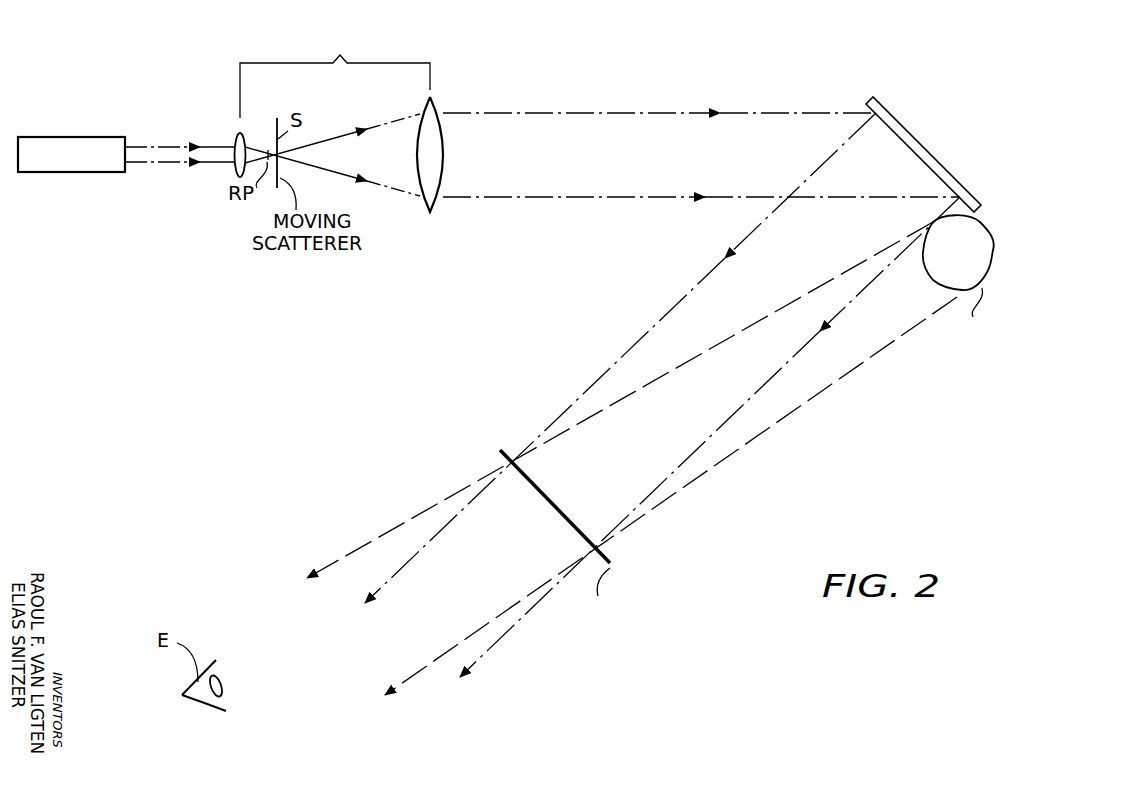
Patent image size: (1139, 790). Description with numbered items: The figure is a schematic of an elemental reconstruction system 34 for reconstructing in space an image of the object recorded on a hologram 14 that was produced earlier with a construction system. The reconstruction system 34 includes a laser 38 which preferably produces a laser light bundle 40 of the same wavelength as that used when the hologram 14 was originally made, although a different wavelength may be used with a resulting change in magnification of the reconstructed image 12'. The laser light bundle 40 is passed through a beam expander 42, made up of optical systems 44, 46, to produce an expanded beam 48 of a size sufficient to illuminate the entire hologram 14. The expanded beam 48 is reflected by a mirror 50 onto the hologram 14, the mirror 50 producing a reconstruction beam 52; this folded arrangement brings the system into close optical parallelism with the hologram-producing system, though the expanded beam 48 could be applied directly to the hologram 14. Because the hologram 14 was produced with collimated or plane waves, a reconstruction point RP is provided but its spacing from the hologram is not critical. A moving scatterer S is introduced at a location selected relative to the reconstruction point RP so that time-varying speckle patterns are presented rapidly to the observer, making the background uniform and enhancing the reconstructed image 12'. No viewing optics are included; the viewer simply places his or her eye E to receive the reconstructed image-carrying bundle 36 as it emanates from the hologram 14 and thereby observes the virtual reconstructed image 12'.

The reconstruction system 34 is at (584, 273).
The laser 38 is at (87, 135).
The laser light bundle 40 is at (167, 162).
The beam expander 42 is at (332, 71).
The optical system 44 is at (238, 135).
The optical system 46 is at (430, 110).
The expanded beam 48 is at (657, 112).
The mirror 50 is at (899, 146).
The reconstruction beam 52 is at (762, 388).
The reconstructed image 12' is at (1020, 293).
The reconstructed image-carrying bundle 36 is at (403, 523).
The hologram 14 is at (612, 558).